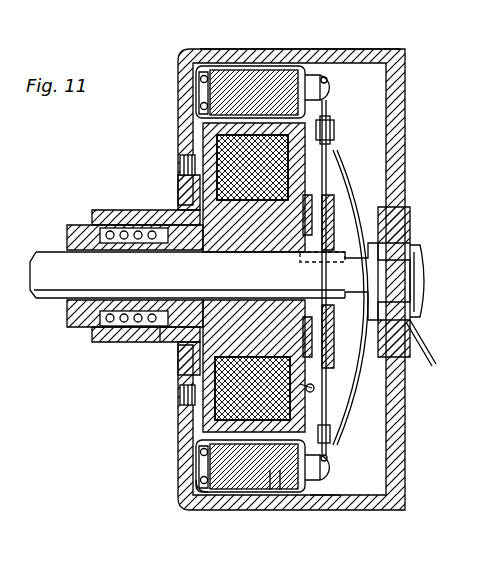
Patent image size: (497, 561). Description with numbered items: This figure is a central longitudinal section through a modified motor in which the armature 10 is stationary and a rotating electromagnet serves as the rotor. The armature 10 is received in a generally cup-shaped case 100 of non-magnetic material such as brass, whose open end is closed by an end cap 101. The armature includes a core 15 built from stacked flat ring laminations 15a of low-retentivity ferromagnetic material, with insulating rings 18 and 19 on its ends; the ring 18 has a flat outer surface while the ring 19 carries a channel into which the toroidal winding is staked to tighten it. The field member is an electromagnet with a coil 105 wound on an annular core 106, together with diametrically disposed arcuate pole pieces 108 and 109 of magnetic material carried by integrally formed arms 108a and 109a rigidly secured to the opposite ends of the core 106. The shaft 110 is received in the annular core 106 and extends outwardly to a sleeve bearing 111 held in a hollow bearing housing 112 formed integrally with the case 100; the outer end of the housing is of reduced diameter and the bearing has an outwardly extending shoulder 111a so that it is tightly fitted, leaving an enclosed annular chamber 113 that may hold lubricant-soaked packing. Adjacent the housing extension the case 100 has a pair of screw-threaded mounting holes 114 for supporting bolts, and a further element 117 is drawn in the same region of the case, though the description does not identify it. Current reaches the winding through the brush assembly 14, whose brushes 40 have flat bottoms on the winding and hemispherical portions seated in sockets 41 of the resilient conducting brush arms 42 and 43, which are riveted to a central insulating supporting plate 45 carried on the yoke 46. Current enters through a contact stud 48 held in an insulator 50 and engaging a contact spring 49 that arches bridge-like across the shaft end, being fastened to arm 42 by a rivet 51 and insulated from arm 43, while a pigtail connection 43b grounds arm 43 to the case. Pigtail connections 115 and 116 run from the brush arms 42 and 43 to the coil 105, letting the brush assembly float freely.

The armature 10 is at (266, 70).
The brush assembly 14 is at (347, 164).
The core 15 is at (252, 492).
The ring laminations 15a is at (280, 492).
The insulating ring 18 is at (322, 500).
The insulating ring 19 is at (190, 487).
The brushes 40 is at (333, 91).
The sockets 41 is at (328, 80).
The brush arm 42 is at (328, 456).
The brush arm 43 is at (328, 113).
The pigtail connection 43b is at (342, 188).
The central supporting plate 45 is at (334, 224).
The yoke 46 is at (303, 330).
The contact stud 48 is at (428, 289).
The contact spring 49 is at (345, 192).
The insulator 50 is at (408, 233).
The rivet 51 is at (331, 433).
The case 100 is at (346, 58).
The end cap 101 is at (398, 92).
The coil 105 is at (254, 187).
The annular core 106 is at (250, 258).
The pole piece 108 is at (252, 388).
The arm 108a is at (252, 388).
The pole piece 109 is at (252, 167).
The arm 109a is at (252, 167).
The shaft 110 is at (52, 254).
The sleeve bearing 111 is at (67, 312).
The shoulder 111a is at (162, 340).
The bearing housing 112 is at (102, 336).
The annular chamber 113 is at (138, 228).
The mounting holes 114 is at (180, 166).
The pigtail connection 115 is at (316, 390).
The pigtail connection 116 is at (302, 170).
The bearing 117 is at (180, 396).